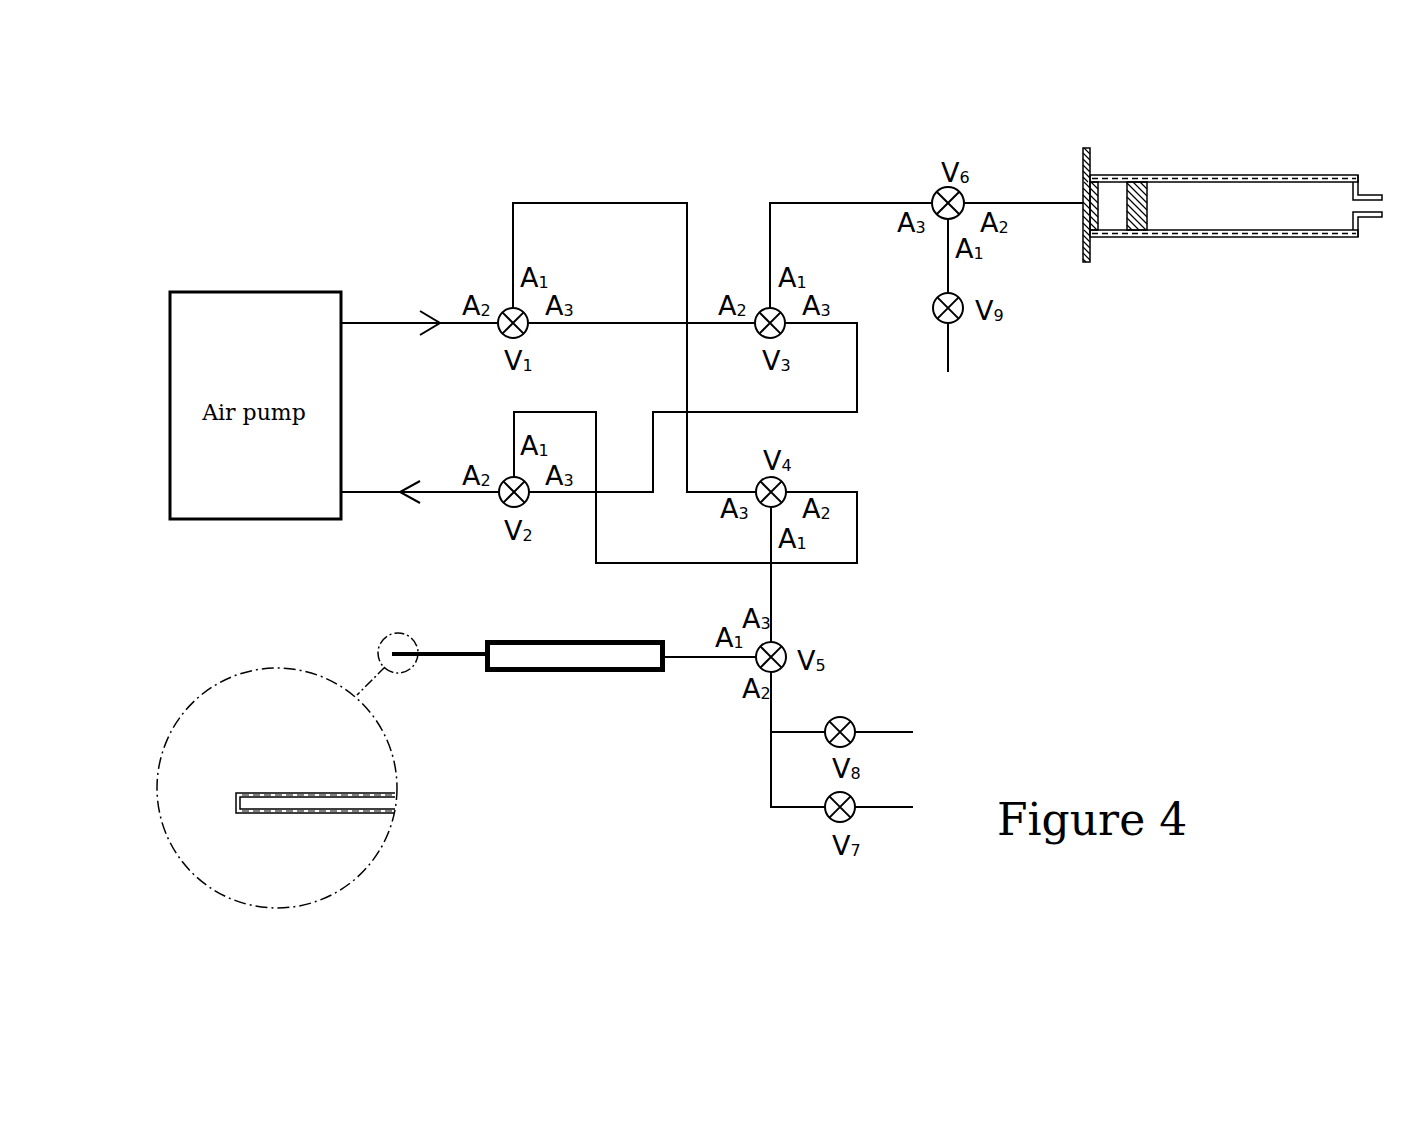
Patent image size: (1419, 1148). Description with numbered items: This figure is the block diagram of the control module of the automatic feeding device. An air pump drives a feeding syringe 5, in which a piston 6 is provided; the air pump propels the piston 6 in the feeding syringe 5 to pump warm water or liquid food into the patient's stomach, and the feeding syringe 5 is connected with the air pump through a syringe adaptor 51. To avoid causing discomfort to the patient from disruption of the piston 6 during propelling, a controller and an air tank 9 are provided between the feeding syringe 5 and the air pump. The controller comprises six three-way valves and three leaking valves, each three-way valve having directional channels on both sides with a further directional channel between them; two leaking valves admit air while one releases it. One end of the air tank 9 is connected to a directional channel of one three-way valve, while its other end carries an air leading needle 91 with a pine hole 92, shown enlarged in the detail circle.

The feeding syringe 5 is at (1340, 169).
The piston 6 is at (1138, 177).
The syringe adaptor 51 is at (1090, 231).
The air tank 9 is at (598, 664).
The air leading needle 91 is at (462, 660).
The pine hole 92 is at (245, 792).